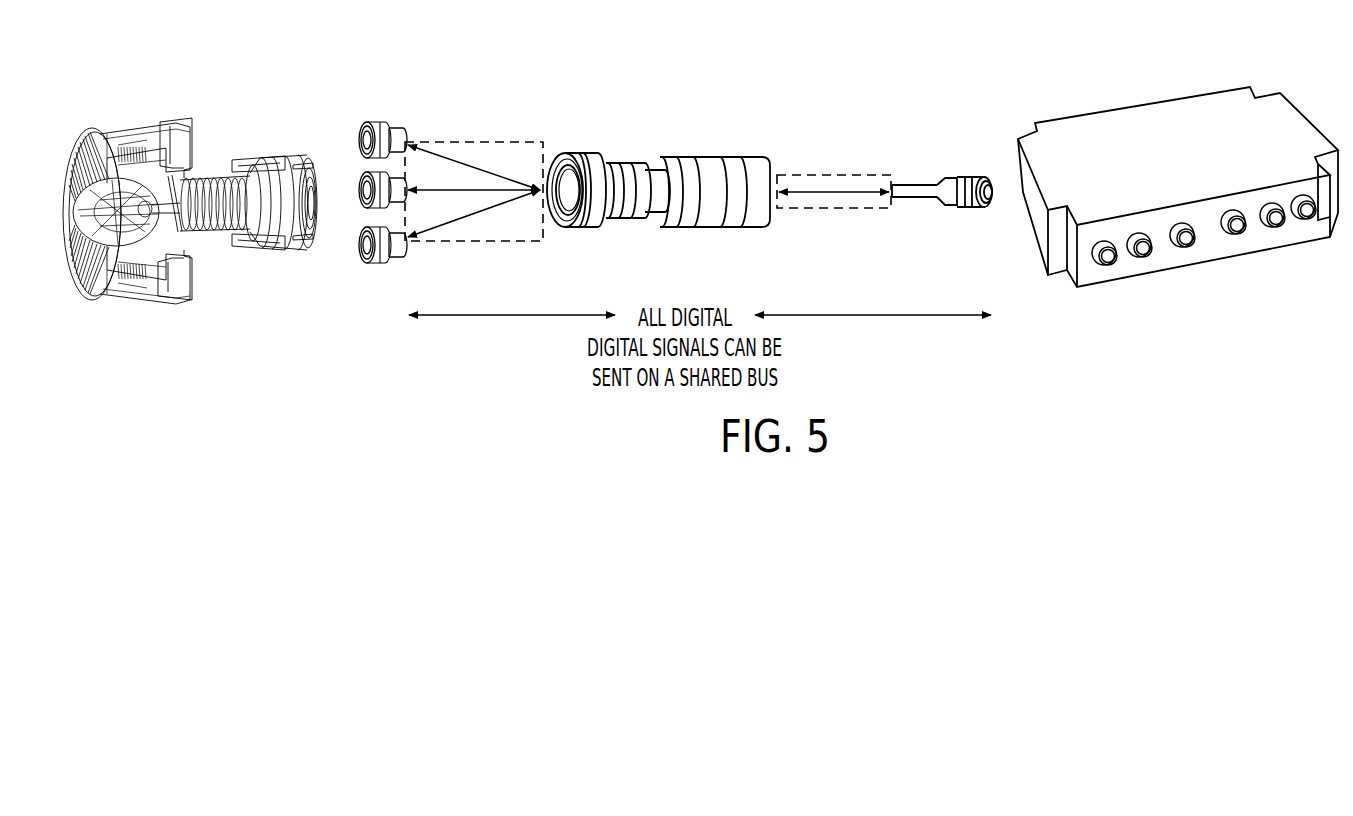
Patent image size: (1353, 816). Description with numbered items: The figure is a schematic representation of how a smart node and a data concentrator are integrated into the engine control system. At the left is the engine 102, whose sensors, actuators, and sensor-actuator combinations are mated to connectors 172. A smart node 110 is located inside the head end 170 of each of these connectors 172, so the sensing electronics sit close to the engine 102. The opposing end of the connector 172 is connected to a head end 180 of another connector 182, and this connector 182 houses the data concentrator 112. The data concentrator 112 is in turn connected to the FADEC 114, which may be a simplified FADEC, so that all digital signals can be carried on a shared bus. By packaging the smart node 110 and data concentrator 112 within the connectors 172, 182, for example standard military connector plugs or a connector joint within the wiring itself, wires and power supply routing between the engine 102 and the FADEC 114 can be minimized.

The engine 102 is at (128, 130).
The smart node 110 is at (360, 270).
The head end 170 is at (375, 119).
The connector 172 is at (474, 142).
The data concentrator 112 is at (692, 157).
The head end 180 is at (588, 229).
The connector 182 is at (828, 175).
The FADEC 114 is at (1097, 112).